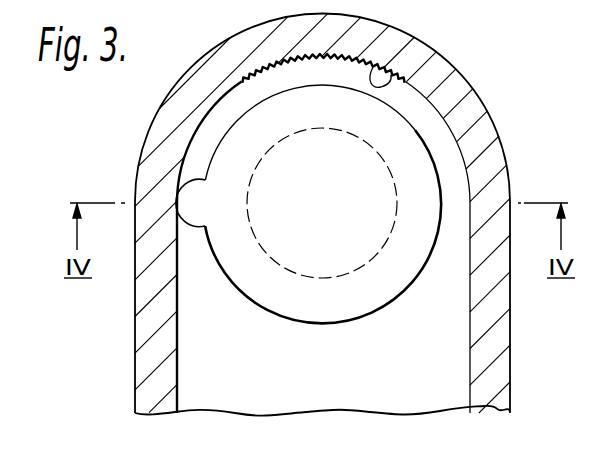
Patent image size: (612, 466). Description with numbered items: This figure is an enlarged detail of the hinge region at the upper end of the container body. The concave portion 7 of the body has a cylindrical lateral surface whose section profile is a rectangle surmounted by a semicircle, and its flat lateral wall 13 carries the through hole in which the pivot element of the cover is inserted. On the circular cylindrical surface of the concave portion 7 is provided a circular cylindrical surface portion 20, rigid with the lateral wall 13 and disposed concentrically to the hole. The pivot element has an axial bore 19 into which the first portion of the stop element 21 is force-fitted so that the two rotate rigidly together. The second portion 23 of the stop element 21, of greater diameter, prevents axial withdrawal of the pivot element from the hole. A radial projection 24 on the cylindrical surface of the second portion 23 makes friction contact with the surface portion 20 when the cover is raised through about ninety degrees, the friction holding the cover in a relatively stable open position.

The concave portion 7 is at (142, 388).
The flat lateral wall 13 is at (224, 355).
The axial bore 19 is at (344, 276).
The circular cylindrical surface portion 20 is at (396, 82).
The stop element 21 is at (218, 282).
The second portion 23 is at (425, 164).
The radial projection 24 is at (189, 223).